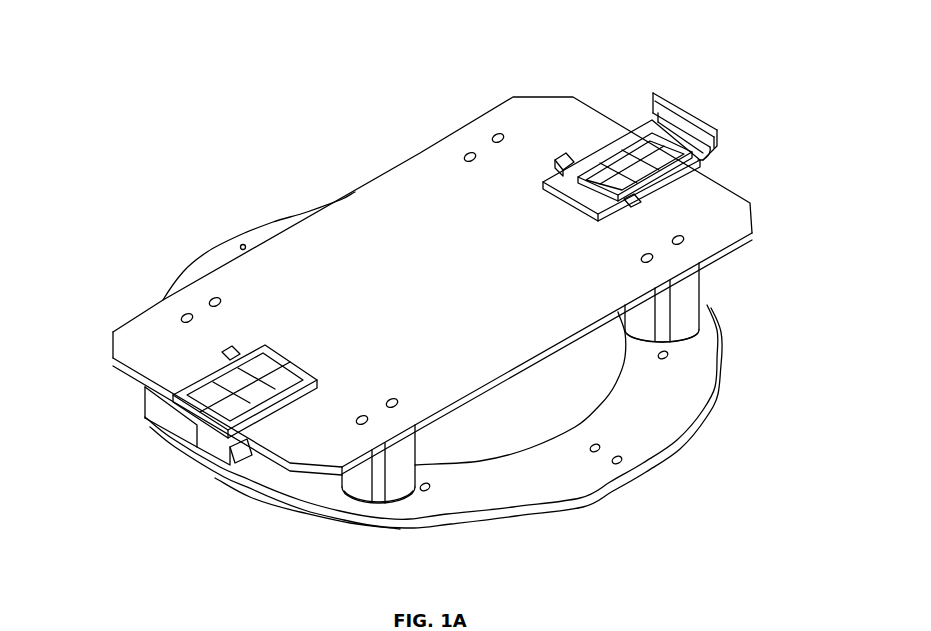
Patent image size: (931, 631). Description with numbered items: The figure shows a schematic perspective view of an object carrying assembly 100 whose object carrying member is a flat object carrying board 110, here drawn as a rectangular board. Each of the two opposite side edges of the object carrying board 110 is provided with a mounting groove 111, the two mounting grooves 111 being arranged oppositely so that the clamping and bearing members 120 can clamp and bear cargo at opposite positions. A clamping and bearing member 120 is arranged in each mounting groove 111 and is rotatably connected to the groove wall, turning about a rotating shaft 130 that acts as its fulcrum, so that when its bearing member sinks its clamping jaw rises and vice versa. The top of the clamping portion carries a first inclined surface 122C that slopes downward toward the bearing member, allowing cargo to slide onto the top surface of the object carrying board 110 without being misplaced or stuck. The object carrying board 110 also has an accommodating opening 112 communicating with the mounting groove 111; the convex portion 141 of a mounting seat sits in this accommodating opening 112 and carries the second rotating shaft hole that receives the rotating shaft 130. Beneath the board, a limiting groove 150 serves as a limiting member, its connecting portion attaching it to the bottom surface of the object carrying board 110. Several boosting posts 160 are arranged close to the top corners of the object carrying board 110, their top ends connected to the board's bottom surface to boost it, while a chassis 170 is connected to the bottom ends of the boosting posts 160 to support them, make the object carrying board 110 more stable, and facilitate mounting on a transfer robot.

The object carrying assembly 100 is at (433, 279).
The object carrying board 110 is at (387, 180).
The mounting groove 111 is at (557, 163).
The accommodating opening 112 is at (222, 353).
The clamping and bearing member 120 is at (138, 407).
The first inclined surface 122C is at (700, 125).
The rotating shaft 130 is at (578, 168).
The convex portion 141 is at (637, 203).
The limiting groove 150 is at (233, 472).
The boosting post 160 is at (416, 491).
The chassis 170 is at (693, 404).